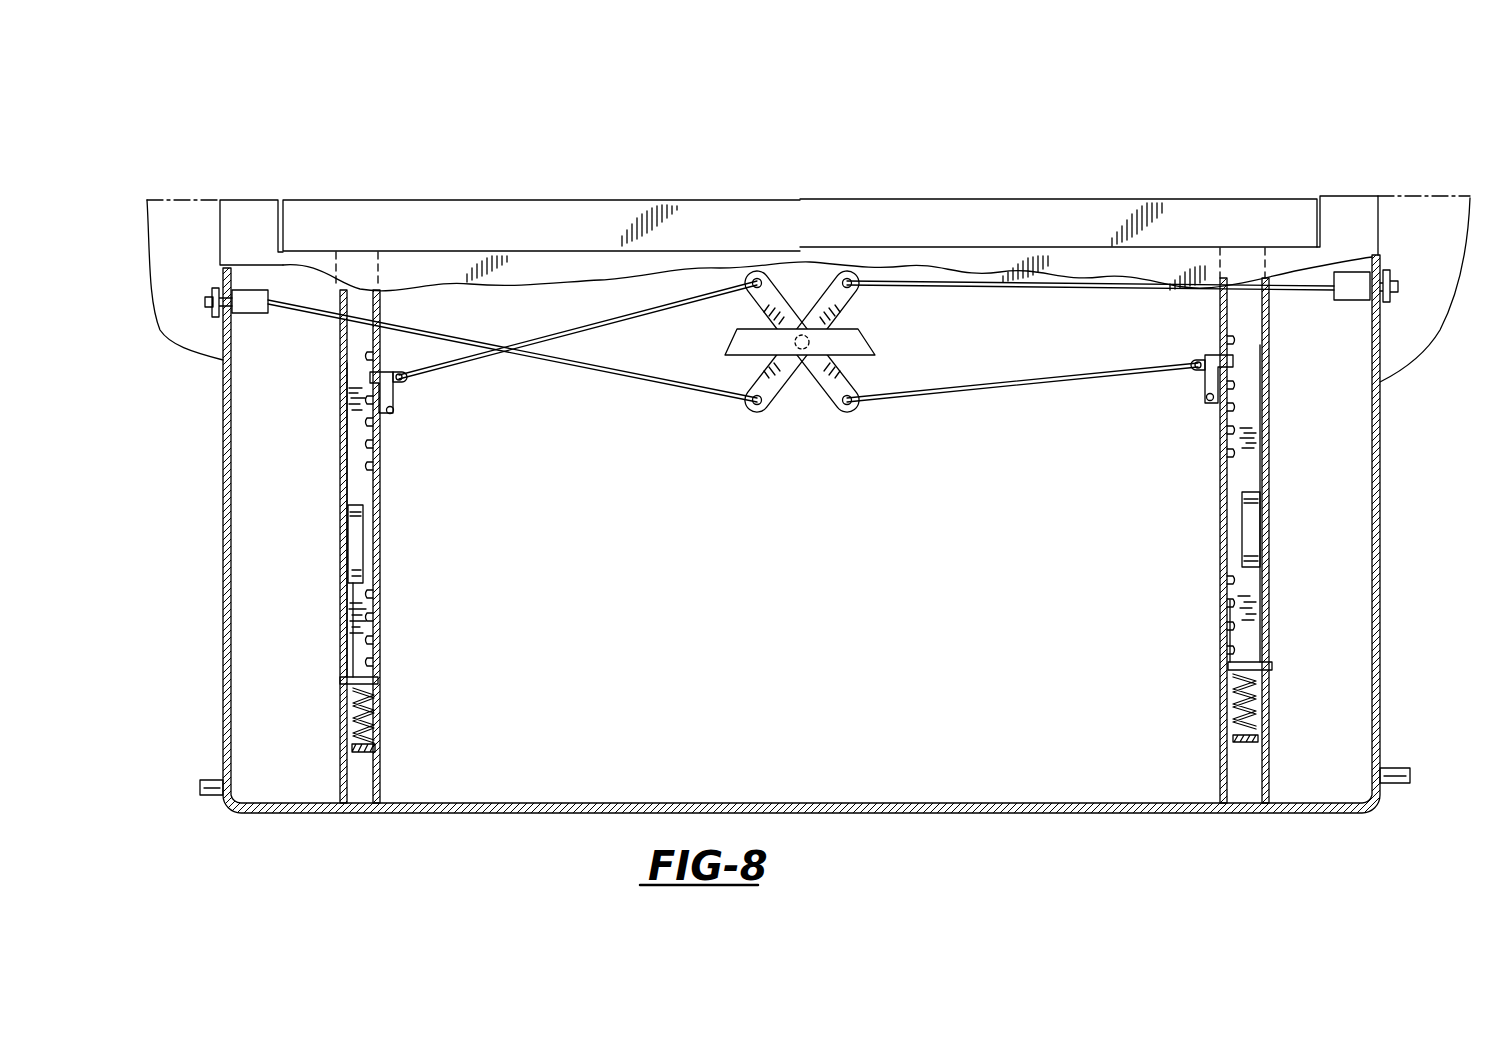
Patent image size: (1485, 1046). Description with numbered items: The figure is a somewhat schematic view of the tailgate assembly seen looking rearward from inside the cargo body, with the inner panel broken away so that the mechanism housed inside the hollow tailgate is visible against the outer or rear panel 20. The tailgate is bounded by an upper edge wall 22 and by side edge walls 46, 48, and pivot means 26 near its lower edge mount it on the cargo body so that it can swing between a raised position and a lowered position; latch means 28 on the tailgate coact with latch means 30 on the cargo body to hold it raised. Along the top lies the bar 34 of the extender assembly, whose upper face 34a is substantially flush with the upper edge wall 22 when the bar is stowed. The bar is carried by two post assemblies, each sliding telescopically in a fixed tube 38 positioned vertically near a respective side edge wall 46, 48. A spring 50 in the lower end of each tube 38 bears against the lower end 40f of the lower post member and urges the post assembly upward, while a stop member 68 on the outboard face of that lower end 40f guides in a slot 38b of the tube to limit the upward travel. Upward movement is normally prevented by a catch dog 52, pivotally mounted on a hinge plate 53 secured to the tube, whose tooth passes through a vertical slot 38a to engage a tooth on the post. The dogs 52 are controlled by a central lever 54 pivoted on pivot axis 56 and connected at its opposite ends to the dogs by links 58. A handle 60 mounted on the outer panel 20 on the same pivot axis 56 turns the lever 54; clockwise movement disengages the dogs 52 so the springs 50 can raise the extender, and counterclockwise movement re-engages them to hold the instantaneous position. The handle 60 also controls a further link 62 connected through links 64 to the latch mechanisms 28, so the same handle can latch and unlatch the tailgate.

The outer or rear panel 20 is at (266, 234).
The upper edge wall 22 is at (253, 198).
The pivot means 26 is at (208, 797).
The latch means 28 is at (255, 315).
The latch means on the cargo body 30 is at (212, 292).
The bar 34 is at (483, 209).
The upper face of the bar 34a is at (935, 197).
The fixed tube 38 is at (336, 590).
The vertical slot 38a is at (370, 598).
The slot 38b is at (345, 425).
The lower end of lower post member 40f is at (355, 665).
The side edge wall 46 is at (226, 560).
The side edge wall 48 is at (1378, 500).
The spring 50 is at (380, 725).
The catch dog 52 is at (395, 392).
The hinge plate 53 is at (394, 416).
The central lever 54 is at (762, 275).
The pivot axis 56 is at (802, 352).
The links 58 is at (480, 352).
The handle 60 is at (737, 343).
The further link 62 is at (832, 278).
The links 64 is at (665, 392).
The stop member 68 is at (342, 680).